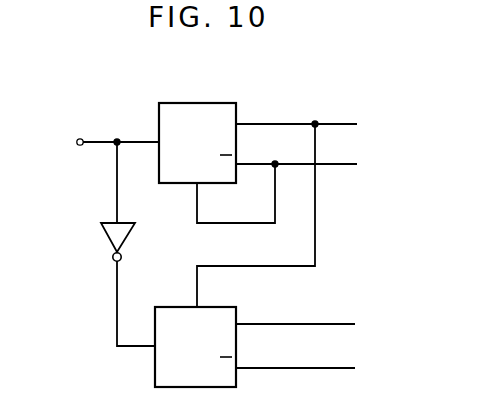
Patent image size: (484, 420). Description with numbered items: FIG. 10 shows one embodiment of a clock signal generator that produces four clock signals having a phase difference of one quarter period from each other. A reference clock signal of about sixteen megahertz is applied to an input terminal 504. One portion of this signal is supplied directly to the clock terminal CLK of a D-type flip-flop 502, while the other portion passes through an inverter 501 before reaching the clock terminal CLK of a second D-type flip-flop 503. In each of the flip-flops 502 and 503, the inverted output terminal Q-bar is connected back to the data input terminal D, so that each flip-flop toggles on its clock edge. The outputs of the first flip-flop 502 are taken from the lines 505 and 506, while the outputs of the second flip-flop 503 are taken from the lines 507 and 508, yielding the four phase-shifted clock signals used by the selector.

The inverter 501 is at (127, 242).
The D-type flip-flop 502 is at (197, 105).
The D-type flip-flop 503 is at (232, 304).
The input terminal 504 is at (96, 133).
The Q output line of first flip-flop 505 is at (296, 124).
The Q-bar output line of first flip-flop 506 is at (290, 164).
The Q output line of second flip-flop 507 is at (331, 324).
The Q-bar output line of second flip-flop 508 is at (326, 368).